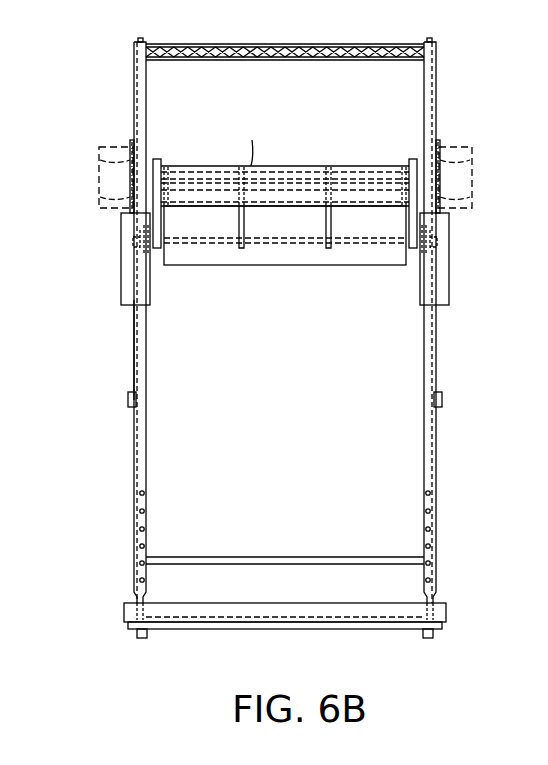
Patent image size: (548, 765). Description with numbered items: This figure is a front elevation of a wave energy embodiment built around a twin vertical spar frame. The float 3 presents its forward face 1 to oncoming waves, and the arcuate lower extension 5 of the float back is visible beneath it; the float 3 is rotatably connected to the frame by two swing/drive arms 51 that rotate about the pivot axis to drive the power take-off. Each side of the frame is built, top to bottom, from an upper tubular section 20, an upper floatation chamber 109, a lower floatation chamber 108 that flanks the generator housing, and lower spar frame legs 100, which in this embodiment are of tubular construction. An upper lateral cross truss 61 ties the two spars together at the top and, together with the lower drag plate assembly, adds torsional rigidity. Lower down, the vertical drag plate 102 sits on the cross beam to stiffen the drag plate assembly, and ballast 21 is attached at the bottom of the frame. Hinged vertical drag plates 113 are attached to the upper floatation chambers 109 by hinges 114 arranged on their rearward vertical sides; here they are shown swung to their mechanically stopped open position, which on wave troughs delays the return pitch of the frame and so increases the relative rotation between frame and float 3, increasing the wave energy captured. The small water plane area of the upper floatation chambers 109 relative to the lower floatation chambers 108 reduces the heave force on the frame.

The forward face 1 is at (309, 186).
The float 3 is at (272, 198).
The arcuate lower extension 5 is at (273, 238).
The upper tubular section 20 is at (134, 93).
The ballast 21 is at (197, 629).
The swing/drive arm 51 is at (162, 224).
The upper lateral cross truss 61 is at (226, 44).
The lower spar frame legs 100 is at (134, 432).
The vertical drag plate 102 is at (210, 577).
The lower floatation chamber 108 is at (131, 260).
The upper floatation chamber 109 is at (142, 153).
The hinged vertical drag plate 113 is at (100, 160).
The hinge 114 is at (130, 197).